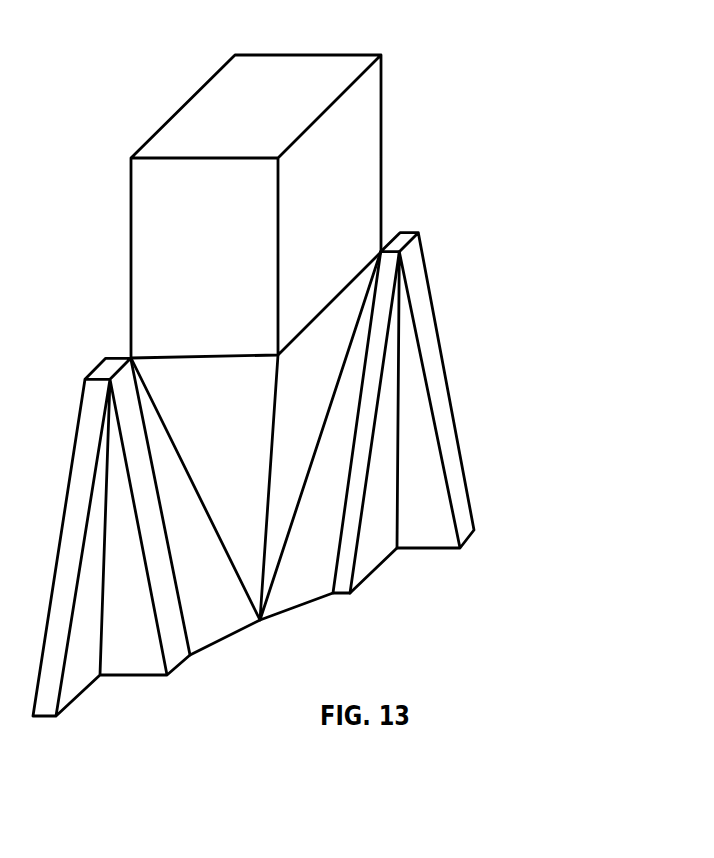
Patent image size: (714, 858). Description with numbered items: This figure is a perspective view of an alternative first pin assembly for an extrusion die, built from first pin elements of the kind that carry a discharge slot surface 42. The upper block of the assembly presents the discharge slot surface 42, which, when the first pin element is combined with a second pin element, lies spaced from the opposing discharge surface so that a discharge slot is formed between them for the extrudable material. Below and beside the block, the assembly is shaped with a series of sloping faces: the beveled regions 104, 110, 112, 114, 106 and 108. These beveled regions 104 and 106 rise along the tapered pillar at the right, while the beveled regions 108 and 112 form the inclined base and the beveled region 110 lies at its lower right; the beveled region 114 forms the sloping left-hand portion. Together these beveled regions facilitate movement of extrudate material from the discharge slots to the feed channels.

The discharge slot surface 42 is at (367, 108).
The beveled region 104 is at (337, 323).
The beveled region 106 is at (435, 360).
The beveled region 108 is at (337, 583).
The beveled region 110 is at (440, 537).
The beveled region 112 is at (377, 547).
The beveled region 114 is at (292, 590).